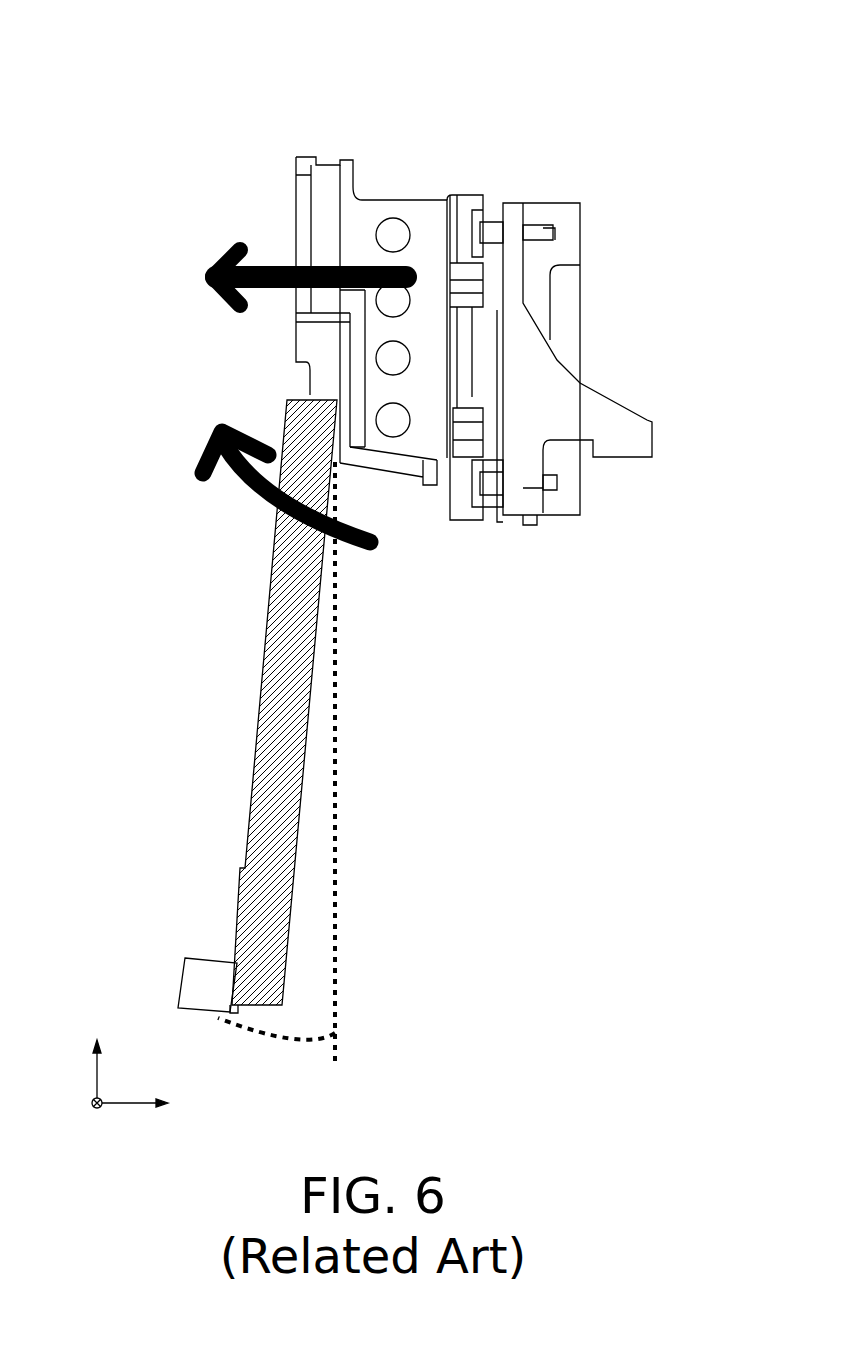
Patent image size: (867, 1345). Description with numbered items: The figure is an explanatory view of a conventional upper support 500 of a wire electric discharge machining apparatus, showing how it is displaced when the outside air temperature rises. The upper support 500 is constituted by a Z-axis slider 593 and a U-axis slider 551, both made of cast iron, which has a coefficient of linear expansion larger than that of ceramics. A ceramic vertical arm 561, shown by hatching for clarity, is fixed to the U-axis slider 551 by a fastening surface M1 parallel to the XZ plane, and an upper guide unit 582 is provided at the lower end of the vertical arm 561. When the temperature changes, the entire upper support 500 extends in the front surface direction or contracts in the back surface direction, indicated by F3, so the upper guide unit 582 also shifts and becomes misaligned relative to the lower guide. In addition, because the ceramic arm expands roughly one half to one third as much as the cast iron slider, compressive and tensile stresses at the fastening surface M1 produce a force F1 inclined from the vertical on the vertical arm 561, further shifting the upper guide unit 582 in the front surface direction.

The conventional upper support 500 is at (422, 22).
The U-axis slider 551 is at (415, 197).
The Z-axis slider 593 is at (568, 200).
The vertical arm 561 is at (273, 735).
The upper guide unit 582 is at (198, 987).
The force inclined from a vertical direction F1 is at (267, 500).
The extension or contraction of the upper support F3 is at (207, 273).
The fastening surface M1 is at (330, 432).